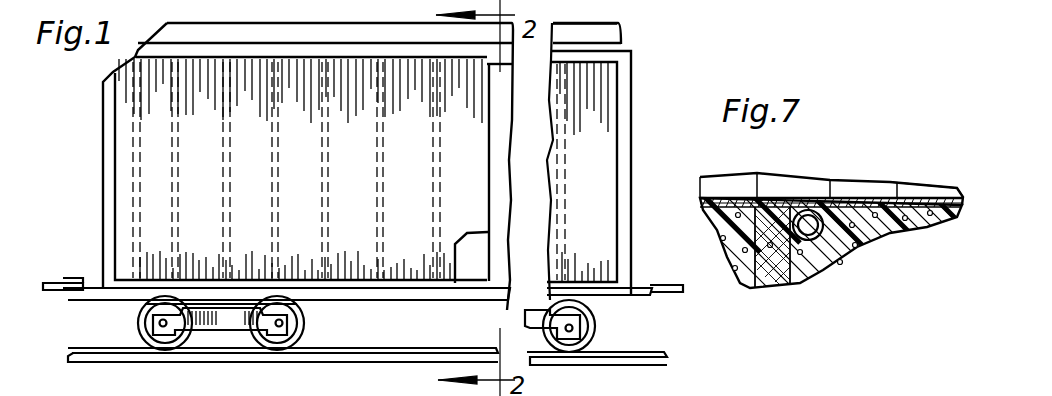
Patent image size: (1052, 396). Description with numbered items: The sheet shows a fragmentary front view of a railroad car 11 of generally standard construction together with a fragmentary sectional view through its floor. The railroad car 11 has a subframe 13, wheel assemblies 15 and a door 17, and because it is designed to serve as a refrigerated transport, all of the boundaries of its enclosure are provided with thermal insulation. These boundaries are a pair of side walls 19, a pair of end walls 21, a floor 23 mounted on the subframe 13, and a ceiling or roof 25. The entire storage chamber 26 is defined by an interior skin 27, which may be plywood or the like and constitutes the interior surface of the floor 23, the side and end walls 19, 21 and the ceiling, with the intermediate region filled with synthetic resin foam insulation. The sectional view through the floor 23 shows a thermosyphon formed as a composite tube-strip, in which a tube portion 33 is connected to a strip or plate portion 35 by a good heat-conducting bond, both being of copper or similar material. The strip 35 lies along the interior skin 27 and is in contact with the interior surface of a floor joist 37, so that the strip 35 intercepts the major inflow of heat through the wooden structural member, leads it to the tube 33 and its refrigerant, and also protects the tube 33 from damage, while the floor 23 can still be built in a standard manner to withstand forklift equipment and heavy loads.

In FIG. 1, the railroad car 11 is at (92, 91).
In FIG. 1, the subframe 13 is at (92, 288).
In FIG. 1, the wheel assemblies 15 is at (312, 320).
In FIG. 1, the door 17 is at (505, 153).
In FIG. 1, the side walls 19 is at (150, 141).
In FIG. 1, the end walls 21 is at (620, 133).
In FIG. 1, the ceiling or roof 25 is at (607, 37).
In FIG. 7, the floor 23 is at (860, 258).
In FIG. 7, the storage chamber 26 is at (768, 177).
In FIG. 7, the interior skin 27 is at (923, 198).
In FIG. 7, the tube portion 33 is at (838, 200).
In FIG. 7, the strip or plate portion 35 is at (863, 198).
In FIG. 7, the floor joist 37 is at (757, 290).